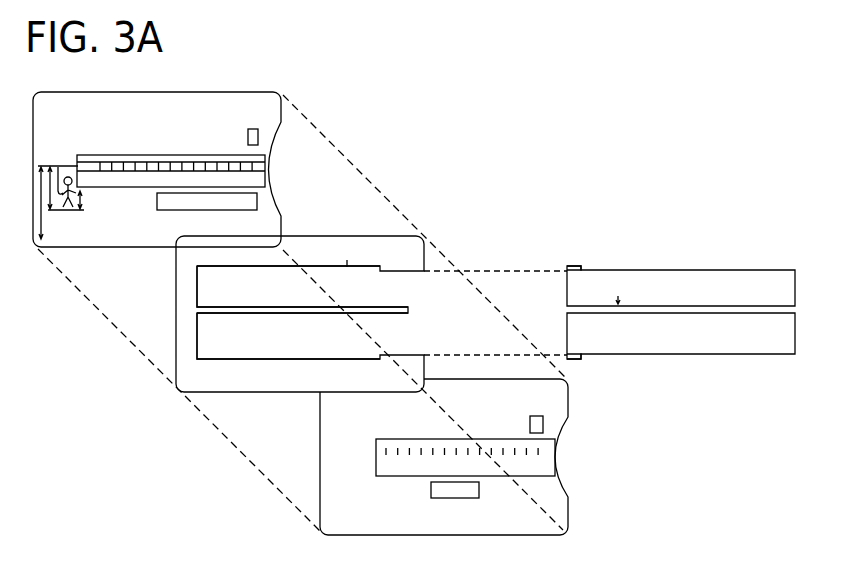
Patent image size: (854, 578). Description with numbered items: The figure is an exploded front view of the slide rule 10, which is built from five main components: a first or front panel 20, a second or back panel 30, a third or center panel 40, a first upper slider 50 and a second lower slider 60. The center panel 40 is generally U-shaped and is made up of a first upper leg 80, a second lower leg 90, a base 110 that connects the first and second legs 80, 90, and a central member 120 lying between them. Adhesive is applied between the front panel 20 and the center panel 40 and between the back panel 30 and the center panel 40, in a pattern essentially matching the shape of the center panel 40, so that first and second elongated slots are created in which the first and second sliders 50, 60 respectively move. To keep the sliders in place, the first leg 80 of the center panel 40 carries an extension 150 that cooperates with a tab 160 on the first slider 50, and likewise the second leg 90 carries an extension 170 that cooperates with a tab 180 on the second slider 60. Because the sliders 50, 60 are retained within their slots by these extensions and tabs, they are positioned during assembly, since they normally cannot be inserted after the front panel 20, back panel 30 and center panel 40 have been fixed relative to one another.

The slide rule 10 is at (474, 127).
The first (front) panel 20 is at (251, 90).
The second (back) panel 30 is at (571, 508).
The third (center) panel 40 is at (340, 293).
The first (upper/top) slider 50 is at (681, 268).
The second (lower/bottom) slider 60 is at (681, 354).
The first (upper) leg 80 is at (347, 275).
The second (lower) leg 90 is at (292, 367).
The base 110 is at (185, 287).
The central member 120 is at (280, 308).
The extension 150 is at (405, 273).
The tab 160 is at (573, 266).
The extension 170 is at (404, 354).
The tab 180 is at (573, 359).